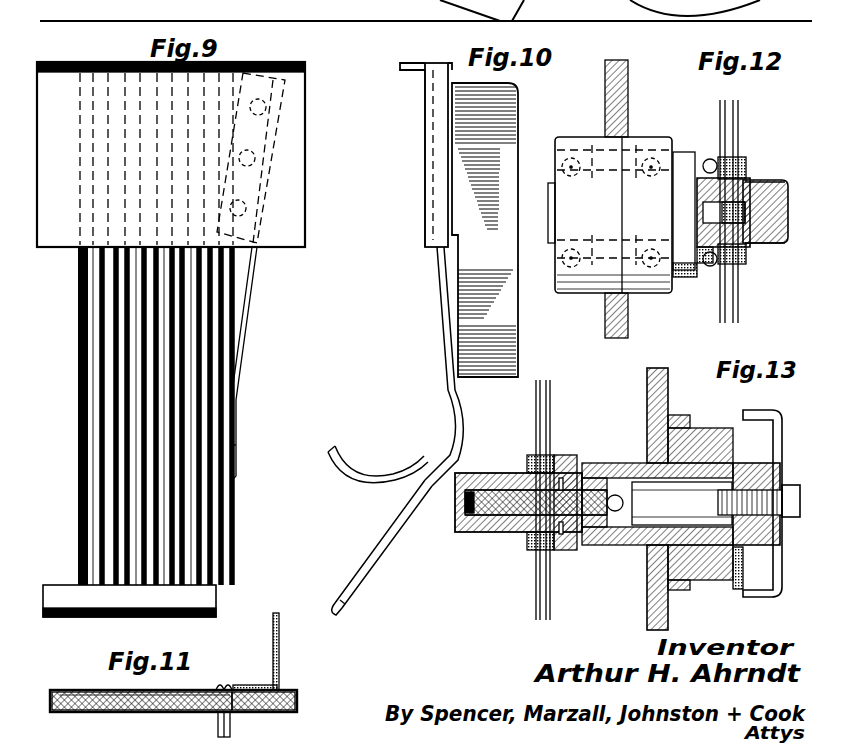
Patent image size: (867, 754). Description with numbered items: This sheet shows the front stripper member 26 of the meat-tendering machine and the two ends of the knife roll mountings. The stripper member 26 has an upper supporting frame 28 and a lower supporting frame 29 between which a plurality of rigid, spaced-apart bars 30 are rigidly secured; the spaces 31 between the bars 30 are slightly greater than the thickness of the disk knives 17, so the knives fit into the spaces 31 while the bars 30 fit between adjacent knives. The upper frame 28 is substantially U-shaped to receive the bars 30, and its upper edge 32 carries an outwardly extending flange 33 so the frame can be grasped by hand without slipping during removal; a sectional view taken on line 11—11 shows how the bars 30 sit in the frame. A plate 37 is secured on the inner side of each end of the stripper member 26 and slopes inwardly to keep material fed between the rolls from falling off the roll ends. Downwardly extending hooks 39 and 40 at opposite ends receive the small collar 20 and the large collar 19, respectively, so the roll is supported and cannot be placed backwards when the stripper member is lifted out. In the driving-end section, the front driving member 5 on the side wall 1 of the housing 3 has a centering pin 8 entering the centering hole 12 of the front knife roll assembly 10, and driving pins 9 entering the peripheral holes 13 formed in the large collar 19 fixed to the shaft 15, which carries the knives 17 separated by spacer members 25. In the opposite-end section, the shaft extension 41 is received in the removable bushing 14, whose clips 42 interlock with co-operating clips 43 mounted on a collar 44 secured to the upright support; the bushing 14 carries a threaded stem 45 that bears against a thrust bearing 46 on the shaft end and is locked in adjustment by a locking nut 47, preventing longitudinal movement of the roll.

In FIG. 12, the side wall 1 is at (605, 90).
In FIG. 12, the housing 3 is at (618, 215).
In FIG. 12, the front driving member 5 is at (683, 150).
In FIG. 12, the centering pin 8 is at (750, 183).
In FIG. 12, the driving pin 9 is at (708, 158).
In FIG. 12, the front knife roll assembly 10 is at (768, 245).
In FIG. 13, the front knife roll assembly 10 is at (530, 460).
In FIG. 9, the rear knife roll assembly 11 is at (27, 103).
In FIG. 12, the centering hole 12 is at (762, 185).
In FIG. 12, the peripheral holes 13 is at (695, 242).
In FIG. 13, the bushing 14 is at (618, 463).
In FIG. 12, the shaft 15 is at (775, 198).
In FIG. 13, the shaft 15 is at (505, 535).
In FIG. 12, the disk knives 17 is at (737, 118).
In FIG. 13, the disk knives 17 is at (538, 390).
In FIG. 12, the large collar 19 is at (688, 280).
In FIG. 13, the small collar 20 is at (572, 457).
In FIG. 12, the spacer members 25 is at (744, 168).
In FIG. 9, the front stripper member 26 is at (307, 160).
In FIG. 11, the front stripper member 26 is at (300, 692).
In FIG. 10, the front stripper member 26 is at (425, 172).
In FIG. 9, the upper supporting frame 28 is at (306, 205).
In FIG. 10, the upper supporting frame 28 is at (425, 138).
In FIG. 9, the lower supporting frame 29 is at (216, 597).
In FIG. 9, the bars 30 is at (82, 508).
In FIG. 11, the bars 30 is at (85, 692).
In FIG. 10, the bars 30 is at (378, 531).
In FIG. 9, the spaces 31 is at (85, 438).
In FIG. 11, the spaces 31 is at (70, 712).
In FIG. 10, the upper edge 32 is at (444, 56).
In FIG. 10, the flange 33 is at (408, 56).
In FIG. 9, the plate 37 is at (246, 328).
In FIG. 11, the plate 37 is at (280, 633).
In FIG. 10, the plate 37 is at (510, 122).
In FIG. 11, the hook 39 is at (240, 716).
In FIG. 10, the hook 39 is at (436, 337).
In FIG. 10, the hook 40 is at (328, 450).
In FIG. 13, the shaft extension 41 is at (480, 535).
In FIG. 13, the clips 42 is at (762, 514).
In FIG. 13, the co-operating clips 43 is at (735, 582).
In FIG. 13, the collar 44 is at (700, 430).
In FIG. 13, the threaded stem 45 is at (770, 488).
In FIG. 13, the thrust bearing 46 is at (613, 512).
In FIG. 13, the locking nut 47 is at (761, 520).